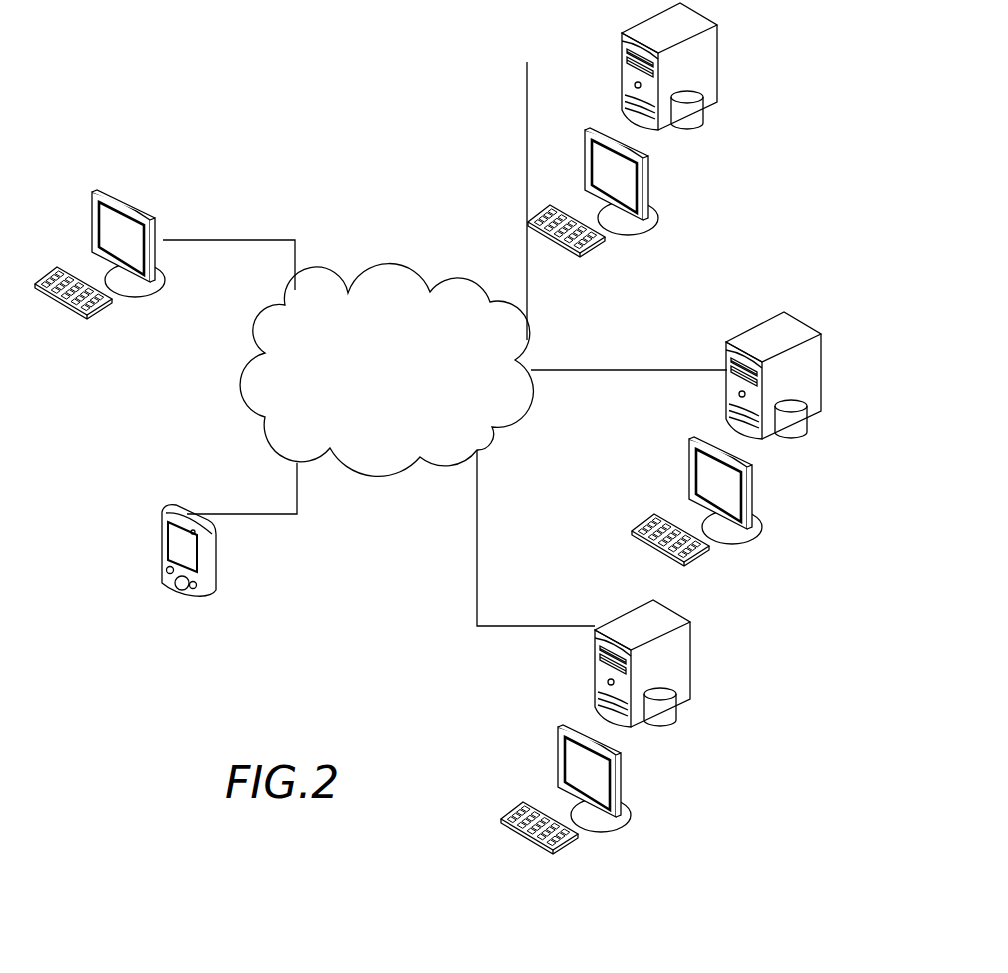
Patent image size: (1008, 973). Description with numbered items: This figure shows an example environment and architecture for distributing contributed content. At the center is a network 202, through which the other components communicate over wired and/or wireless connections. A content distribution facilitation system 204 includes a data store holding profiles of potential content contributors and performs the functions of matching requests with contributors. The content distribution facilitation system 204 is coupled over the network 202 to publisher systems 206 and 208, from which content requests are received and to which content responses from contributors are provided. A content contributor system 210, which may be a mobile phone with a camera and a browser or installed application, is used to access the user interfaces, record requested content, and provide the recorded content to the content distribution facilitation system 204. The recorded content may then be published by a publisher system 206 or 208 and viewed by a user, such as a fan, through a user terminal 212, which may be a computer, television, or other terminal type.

The network 202 is at (386, 370).
The content distribution facilitation system 204 is at (750, 83).
The publisher system 206 is at (820, 428).
The publisher system 208 is at (702, 712).
The content contributor system 210 is at (220, 605).
The user terminal 212 is at (130, 318).